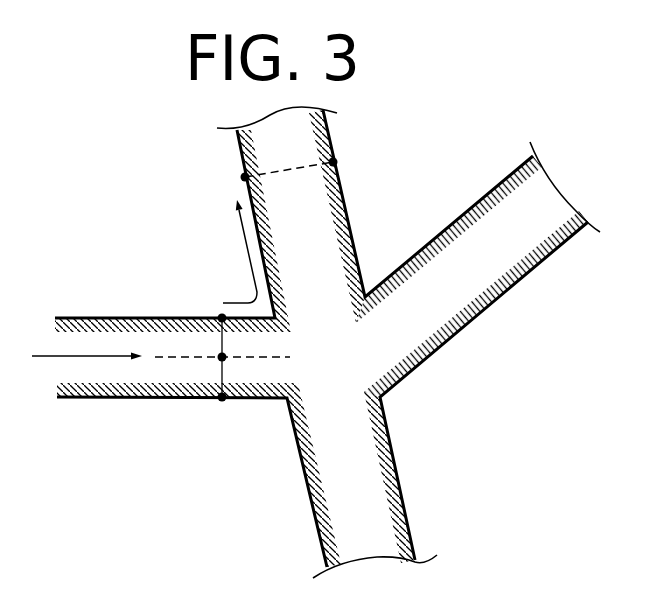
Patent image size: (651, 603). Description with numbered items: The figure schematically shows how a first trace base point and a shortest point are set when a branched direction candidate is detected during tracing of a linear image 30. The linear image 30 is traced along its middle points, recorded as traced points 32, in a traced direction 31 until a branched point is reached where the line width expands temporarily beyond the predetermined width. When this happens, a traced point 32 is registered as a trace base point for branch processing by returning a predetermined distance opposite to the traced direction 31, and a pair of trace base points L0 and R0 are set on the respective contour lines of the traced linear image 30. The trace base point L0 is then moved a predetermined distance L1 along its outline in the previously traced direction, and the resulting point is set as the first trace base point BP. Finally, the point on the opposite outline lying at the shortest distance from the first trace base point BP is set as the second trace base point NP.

The linear image 30 is at (95, 318).
The traced direction 31 is at (58, 358).
The traced point 32 is at (222, 357).
The trace base point L0 is at (201, 302).
The trace base point R0 is at (223, 419).
The predetermined distance L1 is at (232, 251).
The first trace base point BP is at (264, 173).
The second trace base point NP is at (356, 153).